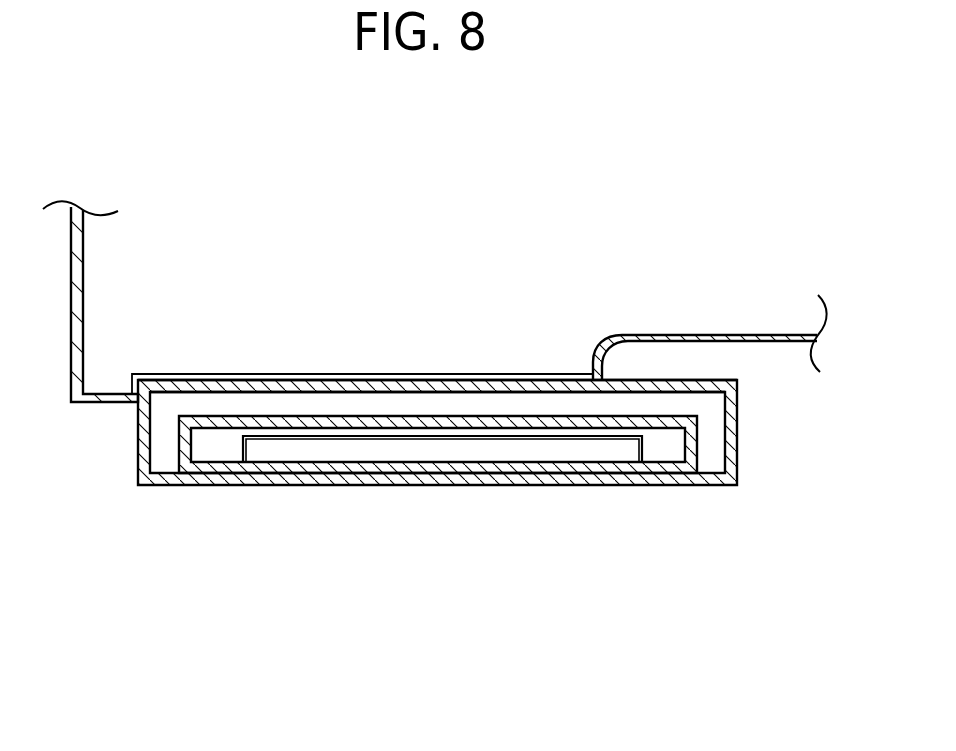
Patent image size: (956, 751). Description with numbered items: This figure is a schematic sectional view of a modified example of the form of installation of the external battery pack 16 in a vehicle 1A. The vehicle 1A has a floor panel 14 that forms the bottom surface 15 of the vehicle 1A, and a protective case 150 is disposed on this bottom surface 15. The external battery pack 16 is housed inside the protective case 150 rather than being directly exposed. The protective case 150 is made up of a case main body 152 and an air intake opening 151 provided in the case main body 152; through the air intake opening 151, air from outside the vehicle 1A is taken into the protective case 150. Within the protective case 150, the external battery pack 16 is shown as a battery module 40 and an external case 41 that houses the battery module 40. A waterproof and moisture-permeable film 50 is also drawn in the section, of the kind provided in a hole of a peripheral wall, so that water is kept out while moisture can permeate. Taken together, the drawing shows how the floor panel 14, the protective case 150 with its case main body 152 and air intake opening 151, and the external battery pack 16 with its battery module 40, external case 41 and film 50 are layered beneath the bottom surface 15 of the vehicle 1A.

The vehicle 1A is at (403, 231).
The floor panel 14 is at (512, 393).
The bottom surface 15 is at (475, 383).
The protective case 150 is at (207, 605).
The air intake opening 151 is at (139, 423).
The case main body 152 is at (181, 478).
The external battery pack 16 is at (383, 605).
The waterproof and moisture-permeable film 50 is at (193, 440).
The battery module 40 is at (316, 446).
The external case 41 is at (377, 473).